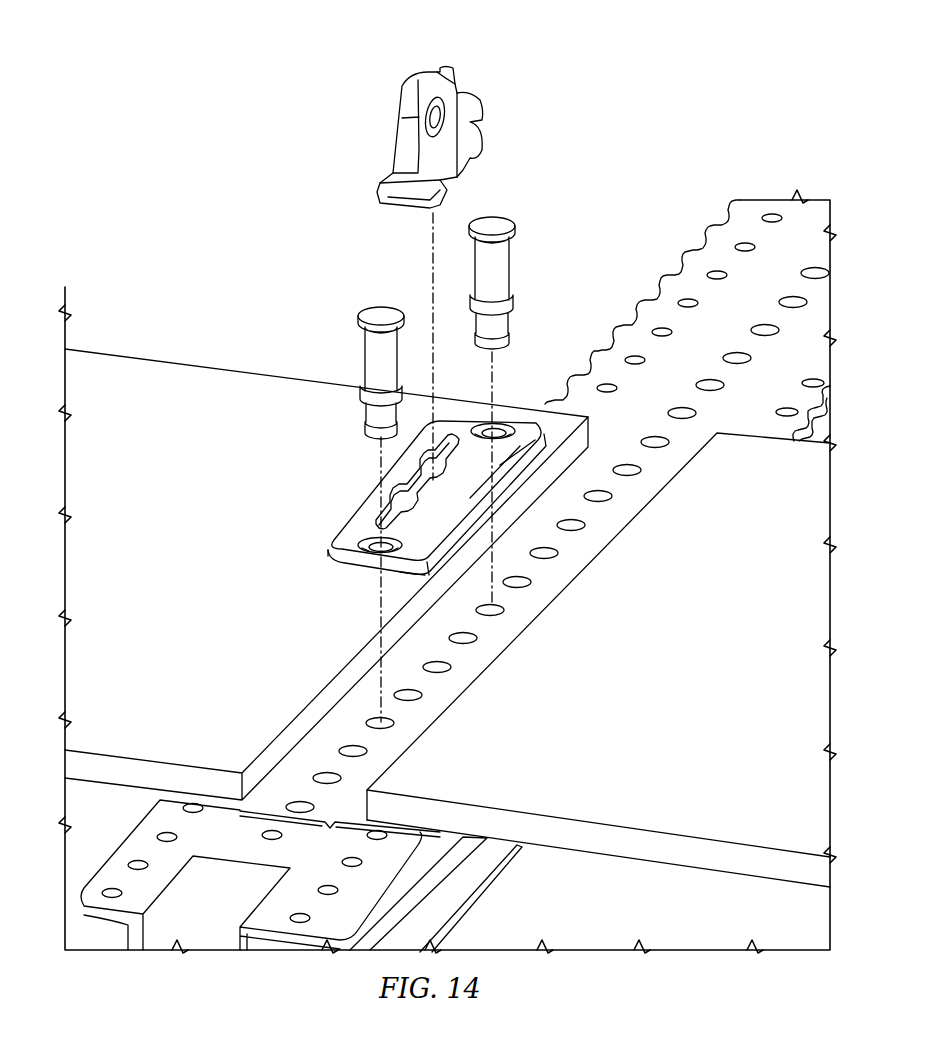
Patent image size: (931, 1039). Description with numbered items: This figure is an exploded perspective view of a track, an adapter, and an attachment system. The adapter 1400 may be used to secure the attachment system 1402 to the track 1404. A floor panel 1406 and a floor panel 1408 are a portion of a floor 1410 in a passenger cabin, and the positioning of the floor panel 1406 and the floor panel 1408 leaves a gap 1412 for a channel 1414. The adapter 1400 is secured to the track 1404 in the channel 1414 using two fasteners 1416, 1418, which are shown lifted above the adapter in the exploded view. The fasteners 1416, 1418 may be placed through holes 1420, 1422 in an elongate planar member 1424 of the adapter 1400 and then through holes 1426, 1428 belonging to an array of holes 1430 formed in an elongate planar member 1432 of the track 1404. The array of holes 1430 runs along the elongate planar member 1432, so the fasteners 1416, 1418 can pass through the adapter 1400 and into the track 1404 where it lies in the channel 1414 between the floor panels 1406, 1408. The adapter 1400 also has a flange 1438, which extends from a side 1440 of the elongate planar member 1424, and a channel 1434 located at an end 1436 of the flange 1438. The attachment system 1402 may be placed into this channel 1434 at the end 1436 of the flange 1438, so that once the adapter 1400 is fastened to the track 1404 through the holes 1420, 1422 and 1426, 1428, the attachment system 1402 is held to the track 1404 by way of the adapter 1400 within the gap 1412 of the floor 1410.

The adapter 1400 is at (497, 489).
The attachment system 1402 is at (417, 92).
The track 1404 is at (558, 506).
The floor panel 1406 is at (196, 567).
The floor panel 1408 is at (736, 662).
The floor 1410 is at (205, 366).
The gap 1412 is at (260, 875).
The channel 1414 is at (600, 453).
The fastener 1416 is at (364, 352).
The fastener 1418 is at (510, 266).
The hole 1420 is at (338, 566).
The hole 1422 is at (506, 423).
The elongate planar member 1424 is at (336, 546).
The hole 1426 is at (396, 716).
The hole 1428 is at (505, 608).
The array of holes 1430 is at (753, 312).
The elongate planar member 1432 is at (647, 343).
The channel 1434 is at (453, 449).
The end 1436 is at (420, 586).
The flange 1438 is at (463, 492).
The side 1440 is at (525, 446).